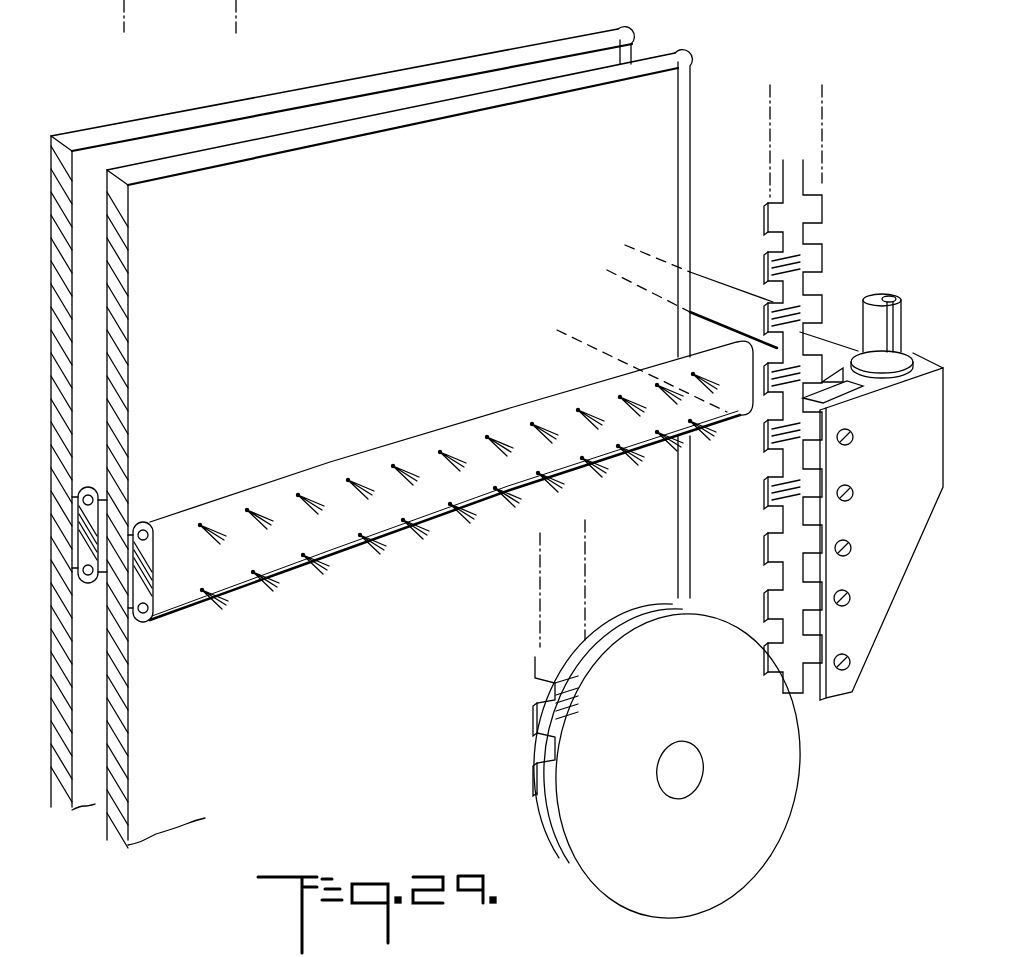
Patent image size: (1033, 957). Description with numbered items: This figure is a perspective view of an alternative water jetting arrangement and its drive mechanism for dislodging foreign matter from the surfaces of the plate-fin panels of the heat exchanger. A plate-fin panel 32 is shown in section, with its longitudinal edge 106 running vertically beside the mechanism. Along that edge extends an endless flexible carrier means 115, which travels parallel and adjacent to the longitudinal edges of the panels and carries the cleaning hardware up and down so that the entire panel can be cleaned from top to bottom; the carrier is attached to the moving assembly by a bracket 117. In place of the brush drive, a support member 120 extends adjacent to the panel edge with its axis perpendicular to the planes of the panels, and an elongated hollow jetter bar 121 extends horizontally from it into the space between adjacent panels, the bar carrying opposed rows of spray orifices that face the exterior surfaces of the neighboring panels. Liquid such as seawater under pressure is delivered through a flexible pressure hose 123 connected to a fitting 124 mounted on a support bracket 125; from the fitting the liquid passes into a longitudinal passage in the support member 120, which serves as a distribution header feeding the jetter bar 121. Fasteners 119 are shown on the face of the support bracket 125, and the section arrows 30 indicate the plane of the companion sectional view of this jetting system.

The longitudinal edge of plate-fin panel 106 is at (682, 56).
The panel 32 is at (462, 192).
The endless flexible carrier means 115 is at (818, 252).
The support member 120 is at (727, 292).
The jetter bar 121 is at (90, 488).
The flexible pressure hose 123 is at (902, 300).
The fitting 124 is at (898, 372).
The screws 119 is at (851, 444).
The support bracket 125 is at (882, 580).
The bracket 117 is at (761, 805).
The section line 30- 30 is at (98, 597).